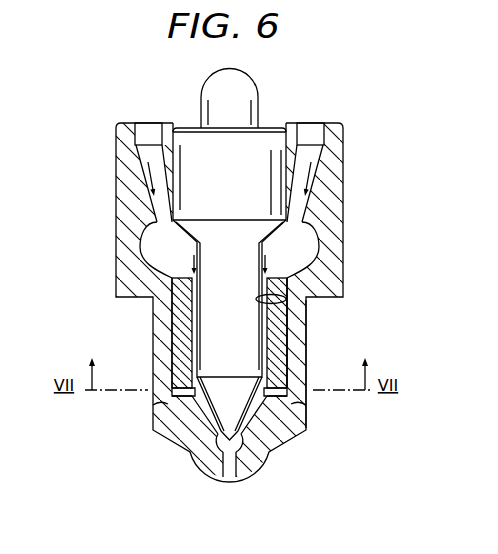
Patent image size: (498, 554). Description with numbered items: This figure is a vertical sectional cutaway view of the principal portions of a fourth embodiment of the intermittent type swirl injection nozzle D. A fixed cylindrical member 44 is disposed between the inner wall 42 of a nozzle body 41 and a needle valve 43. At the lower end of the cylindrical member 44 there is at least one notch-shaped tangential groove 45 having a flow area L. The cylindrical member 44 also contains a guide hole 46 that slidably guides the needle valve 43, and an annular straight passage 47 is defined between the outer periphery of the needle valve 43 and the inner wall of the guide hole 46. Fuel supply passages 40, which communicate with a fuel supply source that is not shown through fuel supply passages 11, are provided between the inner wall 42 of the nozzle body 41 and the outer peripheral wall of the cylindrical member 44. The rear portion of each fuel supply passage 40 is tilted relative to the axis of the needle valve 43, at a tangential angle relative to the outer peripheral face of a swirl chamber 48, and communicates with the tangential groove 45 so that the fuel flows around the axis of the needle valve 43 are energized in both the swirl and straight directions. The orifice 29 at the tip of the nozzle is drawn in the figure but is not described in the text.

The intermittent type swirl injection nozzle D is at (350, 182).
The fuel supply passages 11 is at (158, 203).
The injection orifice 29 is at (231, 474).
The fuel supply passages 40 is at (178, 366).
The nozzle body 41 is at (295, 360).
The inner wall 42 is at (283, 336).
The needle valve 43 is at (200, 329).
The fixed cylindrical member 44 is at (292, 309).
The tangential groove 45 is at (153, 408).
The guide hole 46 is at (262, 298).
The annular straight passage 47 is at (270, 343).
The swirl chamber 48 is at (280, 444).